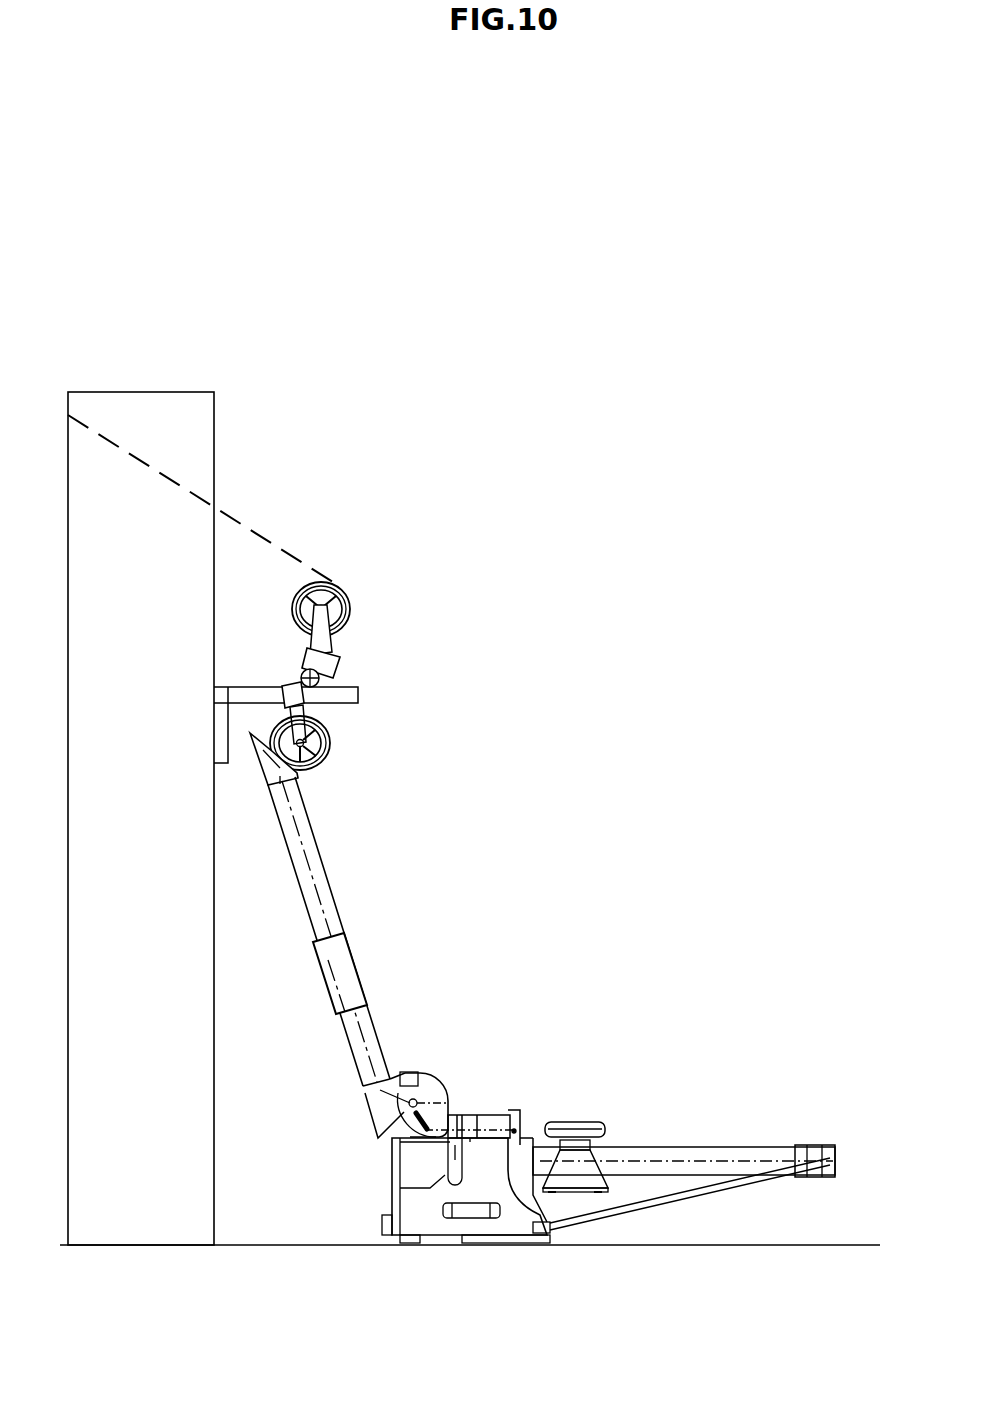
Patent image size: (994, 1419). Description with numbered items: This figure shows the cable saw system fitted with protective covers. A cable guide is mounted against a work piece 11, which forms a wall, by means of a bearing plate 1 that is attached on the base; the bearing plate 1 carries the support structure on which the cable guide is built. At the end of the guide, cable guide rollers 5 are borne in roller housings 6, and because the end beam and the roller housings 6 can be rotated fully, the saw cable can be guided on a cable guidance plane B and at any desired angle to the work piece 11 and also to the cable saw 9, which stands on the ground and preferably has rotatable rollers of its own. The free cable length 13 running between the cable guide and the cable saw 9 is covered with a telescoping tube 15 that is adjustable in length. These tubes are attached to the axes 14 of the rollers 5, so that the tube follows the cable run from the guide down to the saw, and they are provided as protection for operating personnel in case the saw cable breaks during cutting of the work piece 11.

The cable guidance plane B is at (117, 443).
The work piece 11 is at (200, 425).
The bearing plate 1 is at (220, 697).
The cable guide roller 5 is at (347, 622).
The roller housing 6 is at (303, 712).
The axis of the roller 14 is at (322, 741).
The free cable length 13 is at (327, 897).
The telescoping tube 15 is at (358, 972).
The cable saw 9 is at (478, 1163).